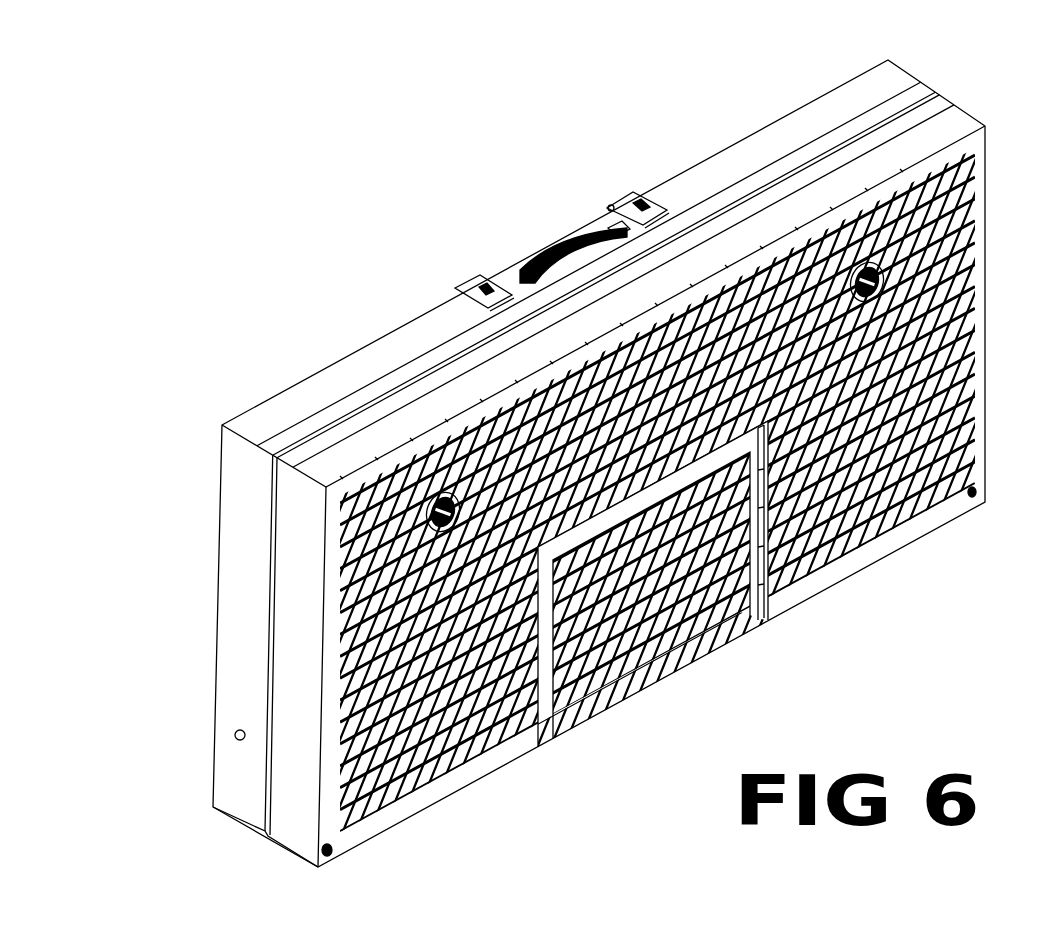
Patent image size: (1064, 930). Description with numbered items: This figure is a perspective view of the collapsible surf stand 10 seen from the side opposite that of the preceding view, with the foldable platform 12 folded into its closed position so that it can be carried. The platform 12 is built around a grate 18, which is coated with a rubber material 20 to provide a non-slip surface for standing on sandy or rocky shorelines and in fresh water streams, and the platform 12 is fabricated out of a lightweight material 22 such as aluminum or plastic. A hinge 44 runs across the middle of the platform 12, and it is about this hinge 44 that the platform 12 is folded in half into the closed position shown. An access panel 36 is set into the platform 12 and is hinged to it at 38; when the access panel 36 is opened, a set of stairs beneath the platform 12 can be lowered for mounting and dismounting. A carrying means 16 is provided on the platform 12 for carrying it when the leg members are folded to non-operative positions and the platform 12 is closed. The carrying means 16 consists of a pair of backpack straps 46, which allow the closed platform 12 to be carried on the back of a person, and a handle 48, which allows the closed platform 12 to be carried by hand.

The collapsible surf stand 10 is at (158, 357).
The foldable platform 12 is at (216, 592).
The carrying means 16 is at (468, 284).
The grate 18 is at (455, 790).
The rubber material 20 is at (935, 520).
The lightweight material 22 is at (235, 736).
The access panel 36 is at (622, 685).
The hinge of access panel 38 is at (775, 612).
The hinge 44 is at (325, 432).
The backpack straps 46 is at (632, 187).
The handle 48 is at (540, 262).